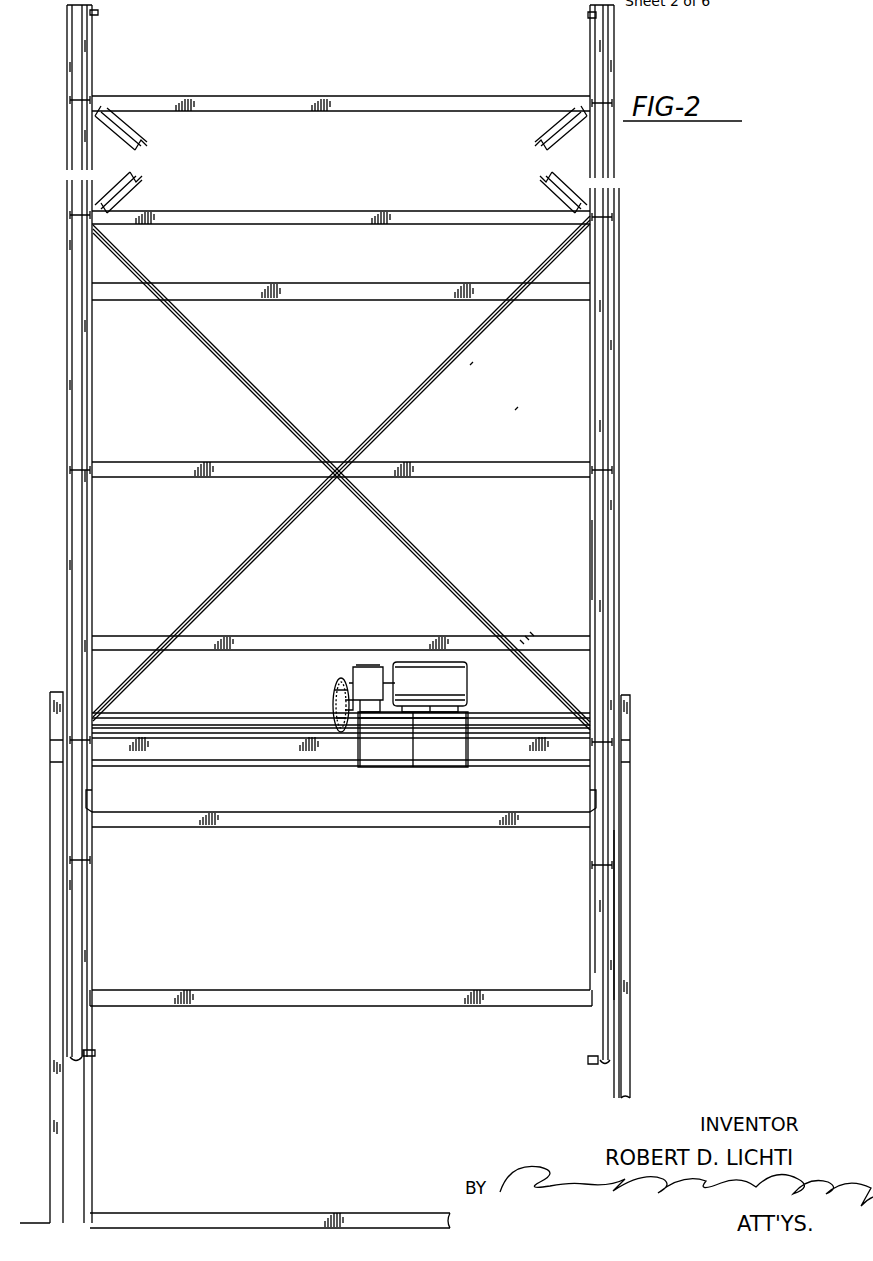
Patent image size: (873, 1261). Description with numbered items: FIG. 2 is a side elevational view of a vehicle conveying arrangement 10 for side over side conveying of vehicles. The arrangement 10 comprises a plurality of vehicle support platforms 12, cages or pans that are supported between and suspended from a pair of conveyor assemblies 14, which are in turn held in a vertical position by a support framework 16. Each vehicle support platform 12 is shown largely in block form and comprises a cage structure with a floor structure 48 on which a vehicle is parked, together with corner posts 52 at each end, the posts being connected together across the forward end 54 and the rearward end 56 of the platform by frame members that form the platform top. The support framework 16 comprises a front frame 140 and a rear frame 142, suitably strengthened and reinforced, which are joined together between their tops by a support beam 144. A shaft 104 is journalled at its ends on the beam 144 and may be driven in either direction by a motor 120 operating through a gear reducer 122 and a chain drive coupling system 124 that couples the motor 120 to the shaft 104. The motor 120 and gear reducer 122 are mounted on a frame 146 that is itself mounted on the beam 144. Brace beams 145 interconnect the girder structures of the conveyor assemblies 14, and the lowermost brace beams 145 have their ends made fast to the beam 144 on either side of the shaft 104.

The vehicle conveying arrangement 10 is at (648, 516).
The vehicle support platform 12 is at (345, 303).
The conveyor assembly 14 is at (66, 209).
The support framework 16 is at (636, 920).
The floor structure 48 is at (540, 645).
The corner post 52 is at (588, 560).
The forward end 54 is at (90, 994).
The rearward end 56 is at (578, 1000).
The shaft 104 is at (215, 718).
The motor 120 is at (428, 675).
The gear reducer 122 is at (372, 672).
The chain drive coupling system 124 is at (333, 691).
The front frame 140 is at (53, 700).
The rear frame 142 is at (632, 716).
The support beam 144 is at (272, 760).
The brace beam 145 is at (462, 367).
The frame 146 is at (462, 757).